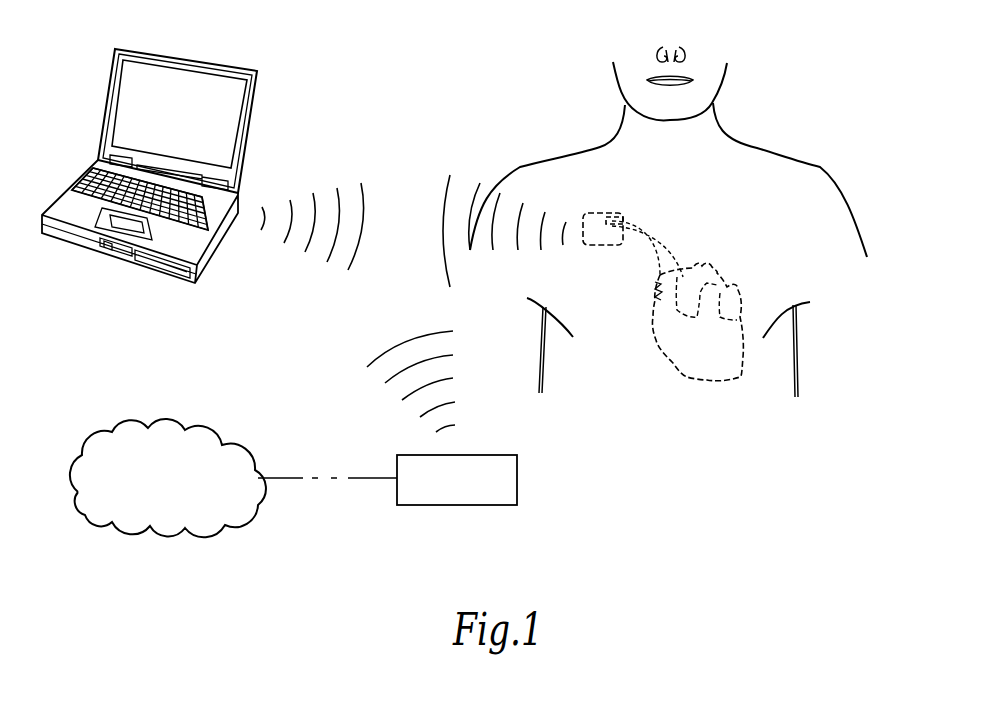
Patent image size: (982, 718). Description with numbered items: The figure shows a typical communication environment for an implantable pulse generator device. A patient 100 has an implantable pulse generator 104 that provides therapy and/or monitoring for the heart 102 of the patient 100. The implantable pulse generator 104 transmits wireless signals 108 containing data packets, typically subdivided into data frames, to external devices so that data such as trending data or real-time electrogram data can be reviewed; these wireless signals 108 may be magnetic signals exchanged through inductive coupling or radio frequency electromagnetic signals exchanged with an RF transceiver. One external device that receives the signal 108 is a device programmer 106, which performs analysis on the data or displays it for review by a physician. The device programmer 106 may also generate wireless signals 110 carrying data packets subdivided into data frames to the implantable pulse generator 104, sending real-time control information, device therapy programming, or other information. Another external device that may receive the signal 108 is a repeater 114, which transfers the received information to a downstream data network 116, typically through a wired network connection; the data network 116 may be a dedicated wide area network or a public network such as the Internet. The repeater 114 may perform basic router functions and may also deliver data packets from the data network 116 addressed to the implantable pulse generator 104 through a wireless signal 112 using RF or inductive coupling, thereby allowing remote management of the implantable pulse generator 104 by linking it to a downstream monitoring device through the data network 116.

The patient 100 is at (763, 148).
The heart 102 is at (692, 378).
The implantable pulse generator 104 is at (605, 248).
The device programmer 106 is at (188, 55).
The wireless signals 108 is at (450, 284).
The wireless signals 110 is at (358, 186).
The wireless signal 112 is at (408, 342).
The repeater 114 is at (518, 478).
The data network 116 is at (180, 533).